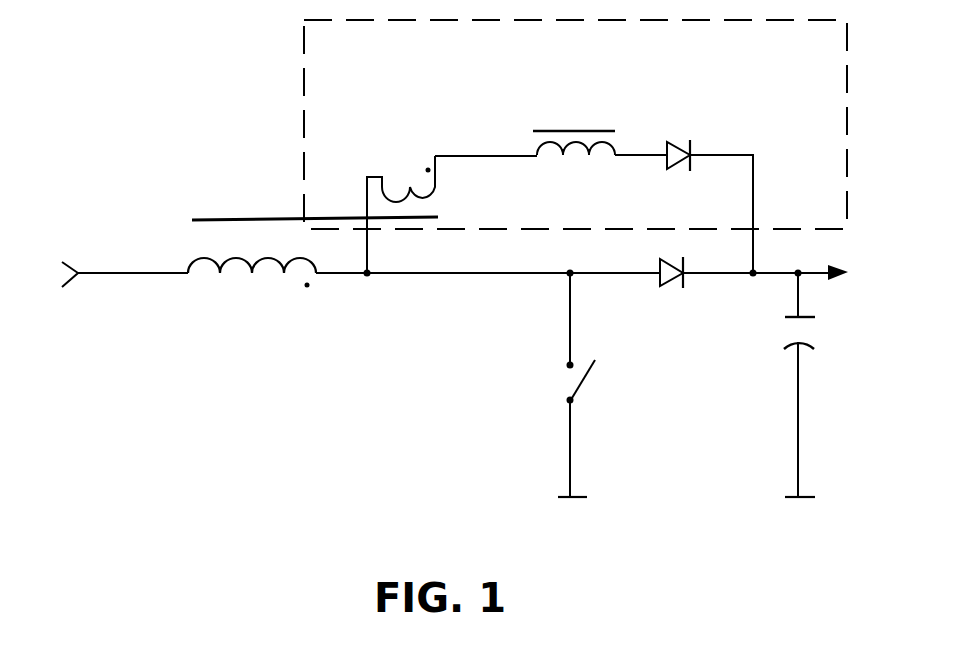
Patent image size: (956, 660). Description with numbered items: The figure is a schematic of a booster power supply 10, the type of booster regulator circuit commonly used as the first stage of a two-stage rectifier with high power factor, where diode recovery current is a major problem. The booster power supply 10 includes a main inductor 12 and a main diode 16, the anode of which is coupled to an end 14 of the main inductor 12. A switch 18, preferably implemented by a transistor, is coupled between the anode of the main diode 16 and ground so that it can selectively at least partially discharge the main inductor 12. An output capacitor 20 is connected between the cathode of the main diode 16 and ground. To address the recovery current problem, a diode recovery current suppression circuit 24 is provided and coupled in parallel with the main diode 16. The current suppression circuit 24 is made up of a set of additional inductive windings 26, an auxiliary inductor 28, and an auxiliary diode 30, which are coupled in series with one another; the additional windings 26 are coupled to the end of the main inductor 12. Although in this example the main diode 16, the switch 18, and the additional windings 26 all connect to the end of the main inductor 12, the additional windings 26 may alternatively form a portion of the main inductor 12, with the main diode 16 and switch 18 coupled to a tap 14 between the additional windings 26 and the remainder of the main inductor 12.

The booster power supply 10 is at (362, 465).
The main inductor 12 is at (220, 277).
The end of the main inductor 14 is at (370, 277).
The main diode 16 is at (658, 278).
The switch 18 is at (571, 380).
The output capacitor 20 is at (795, 335).
The diode recovery current suppression circuit 24 is at (302, 148).
The set of additional inductive windings 26 is at (392, 163).
The auxiliary inductor 28 is at (584, 172).
The auxiliary diode 30 is at (660, 144).